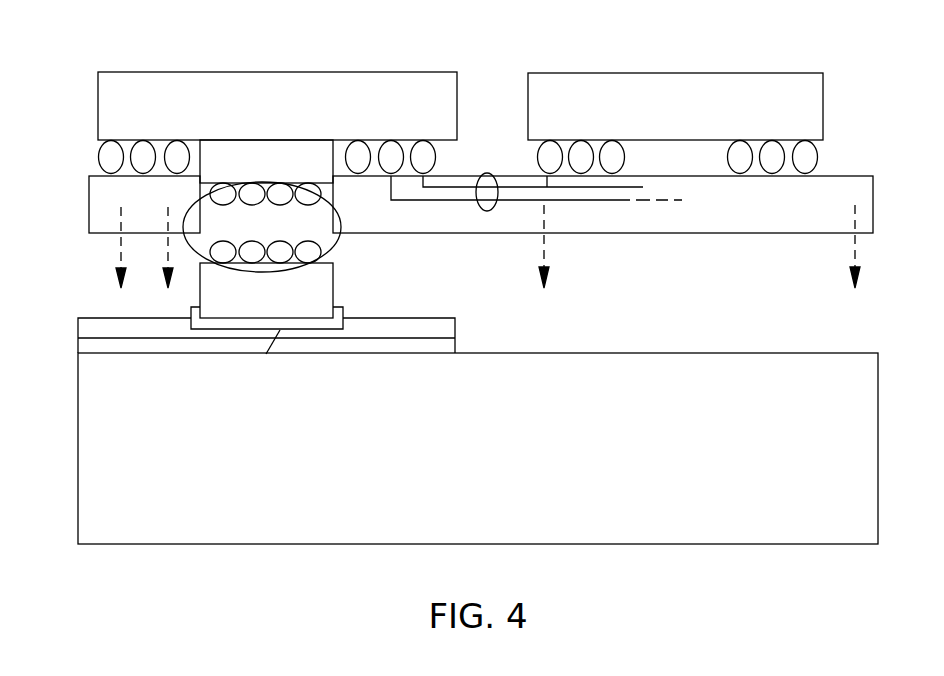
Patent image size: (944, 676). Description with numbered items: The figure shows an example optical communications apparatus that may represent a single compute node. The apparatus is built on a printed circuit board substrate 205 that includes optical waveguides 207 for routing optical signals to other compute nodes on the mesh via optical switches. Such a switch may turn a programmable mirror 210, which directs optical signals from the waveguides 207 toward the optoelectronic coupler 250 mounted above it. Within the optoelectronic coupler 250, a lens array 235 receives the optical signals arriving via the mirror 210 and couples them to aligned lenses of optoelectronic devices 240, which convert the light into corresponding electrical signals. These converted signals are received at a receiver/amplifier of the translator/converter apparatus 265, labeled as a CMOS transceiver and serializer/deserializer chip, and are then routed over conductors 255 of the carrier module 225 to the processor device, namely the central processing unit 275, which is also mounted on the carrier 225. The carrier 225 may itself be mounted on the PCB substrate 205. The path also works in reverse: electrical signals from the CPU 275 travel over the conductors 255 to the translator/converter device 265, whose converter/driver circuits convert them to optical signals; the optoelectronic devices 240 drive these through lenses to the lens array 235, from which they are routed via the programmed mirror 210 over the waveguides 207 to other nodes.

The printed circuit board substrate 205 is at (757, 486).
The optical waveguides 207 is at (98, 338).
The mirror 210 is at (282, 336).
The carrier module 225 is at (387, 220).
The lens array 235 is at (279, 304).
The optoelectronic devices 240 is at (279, 170).
The optoelectronic coupler 250 is at (222, 223).
The conductors 255 is at (487, 173).
The translator/converter apparatus 265 is at (378, 71).
The central processing unit 275 is at (621, 73).